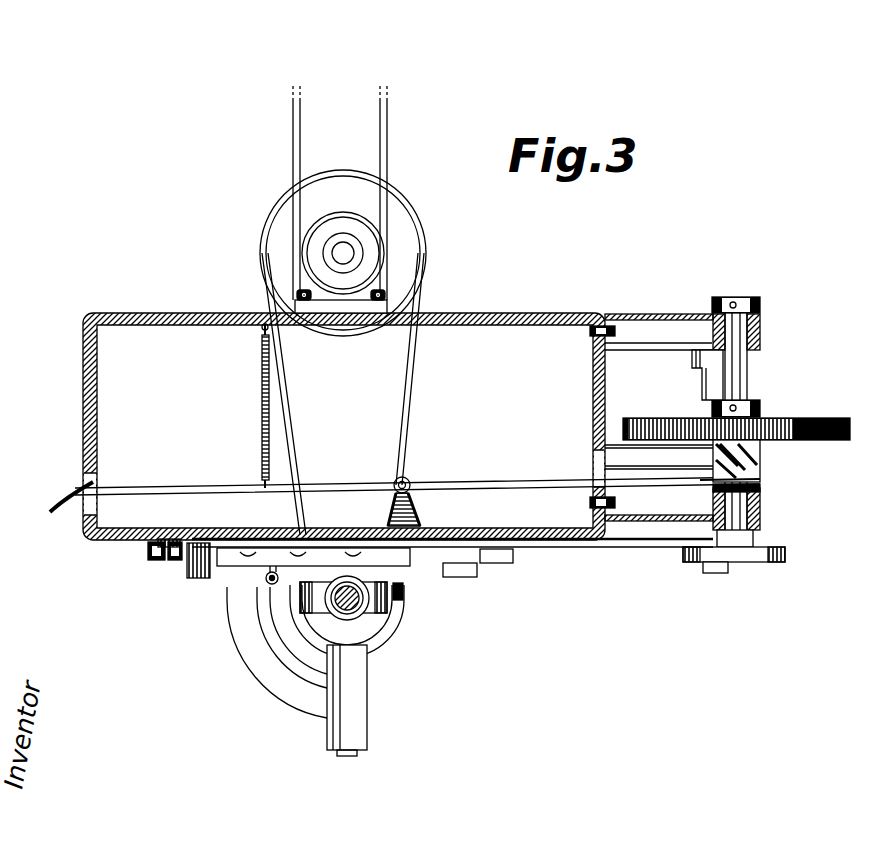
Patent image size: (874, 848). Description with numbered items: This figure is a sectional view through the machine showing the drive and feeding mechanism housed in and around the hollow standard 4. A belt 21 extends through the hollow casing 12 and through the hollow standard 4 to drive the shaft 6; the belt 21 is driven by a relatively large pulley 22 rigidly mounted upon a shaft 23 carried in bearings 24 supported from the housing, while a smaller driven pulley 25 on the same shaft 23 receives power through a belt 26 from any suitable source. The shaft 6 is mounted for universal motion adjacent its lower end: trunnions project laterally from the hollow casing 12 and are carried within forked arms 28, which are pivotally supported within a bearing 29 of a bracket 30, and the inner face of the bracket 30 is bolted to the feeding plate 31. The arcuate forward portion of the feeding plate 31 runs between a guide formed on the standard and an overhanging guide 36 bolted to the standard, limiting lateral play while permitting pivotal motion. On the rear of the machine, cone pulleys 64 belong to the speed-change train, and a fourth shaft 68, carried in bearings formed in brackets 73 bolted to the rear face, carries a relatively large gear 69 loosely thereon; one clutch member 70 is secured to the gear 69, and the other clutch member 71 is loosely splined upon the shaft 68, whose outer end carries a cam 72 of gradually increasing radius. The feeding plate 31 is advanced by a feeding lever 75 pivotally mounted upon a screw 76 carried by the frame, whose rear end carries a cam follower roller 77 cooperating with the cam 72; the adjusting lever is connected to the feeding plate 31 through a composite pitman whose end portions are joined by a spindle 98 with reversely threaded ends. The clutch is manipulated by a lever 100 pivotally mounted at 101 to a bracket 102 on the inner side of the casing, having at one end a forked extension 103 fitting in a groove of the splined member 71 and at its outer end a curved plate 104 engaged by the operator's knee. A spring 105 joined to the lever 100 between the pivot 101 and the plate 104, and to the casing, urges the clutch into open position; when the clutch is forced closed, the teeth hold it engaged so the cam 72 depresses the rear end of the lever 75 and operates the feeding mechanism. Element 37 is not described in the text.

The hollow standard 4 is at (150, 312).
The shaft 6 is at (335, 619).
The hollow casing 12 is at (383, 613).
The belt 21 is at (410, 402).
The pulley 22 is at (420, 260).
The shaft 23 is at (341, 244).
The bearings 24 is at (343, 320).
The driven pulley 25 is at (330, 252).
The belt 26 is at (293, 161).
The forked arms 28 is at (405, 633).
The bearing 29 is at (370, 710).
The bracket 30 is at (280, 662).
The feeding plate 31 is at (340, 548).
The overhanging guide 36 is at (190, 590).
The pin 37 is at (266, 584).
The cone pulleys 64 is at (692, 380).
The fourth shaft 68 is at (738, 297).
The gear 69 is at (812, 418).
The clutch member 70 is at (714, 455).
The clutch member 71 is at (760, 470).
The cam 72 is at (786, 554).
The brackets 73 is at (640, 314).
The feeding lever 75 is at (600, 548).
The screw 76 is at (498, 565).
The cam follower roller 77 is at (715, 573).
The spindle 98 is at (273, 548).
The lever 100 is at (518, 478).
The pivot 101 is at (408, 479).
The bracket 102 is at (420, 511).
The forked extension 103 is at (762, 483).
The curved plate 104 is at (75, 482).
The spring 105 is at (262, 395).